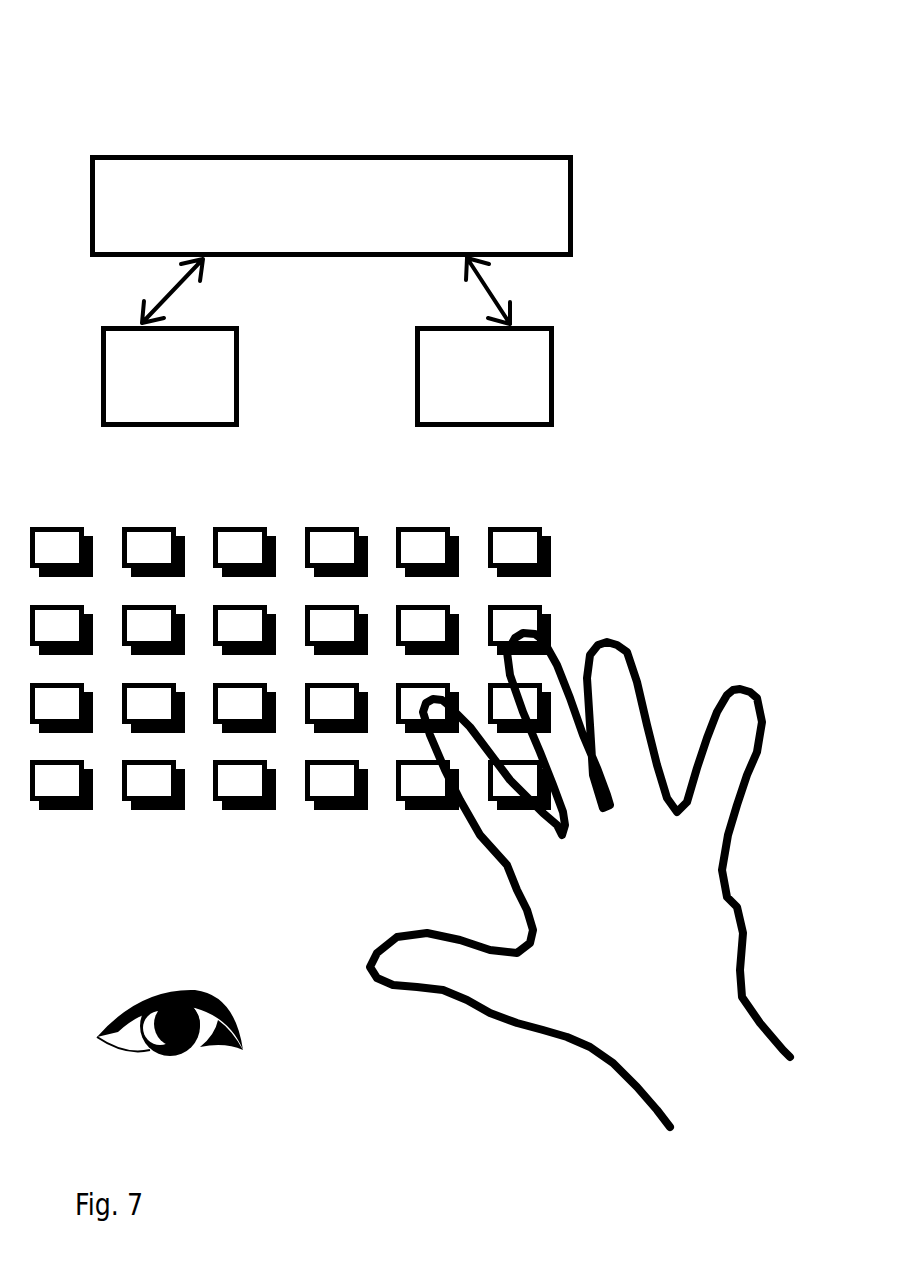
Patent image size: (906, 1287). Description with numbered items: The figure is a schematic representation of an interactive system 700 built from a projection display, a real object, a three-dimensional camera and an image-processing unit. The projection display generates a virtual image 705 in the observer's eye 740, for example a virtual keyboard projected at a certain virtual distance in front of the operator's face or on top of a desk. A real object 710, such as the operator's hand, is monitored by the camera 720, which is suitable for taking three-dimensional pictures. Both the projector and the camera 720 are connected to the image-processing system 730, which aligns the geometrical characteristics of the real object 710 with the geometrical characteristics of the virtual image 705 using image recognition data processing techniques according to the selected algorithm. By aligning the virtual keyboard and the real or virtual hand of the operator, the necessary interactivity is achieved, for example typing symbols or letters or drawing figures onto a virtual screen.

The interactive system 700 is at (80, 102).
The image-processing system 730 is at (370, 204).
The camera 720 is at (500, 402).
The virtual image 705 is at (288, 705).
The real object 710 is at (586, 904).
The operator's eyes 740 is at (185, 1047).